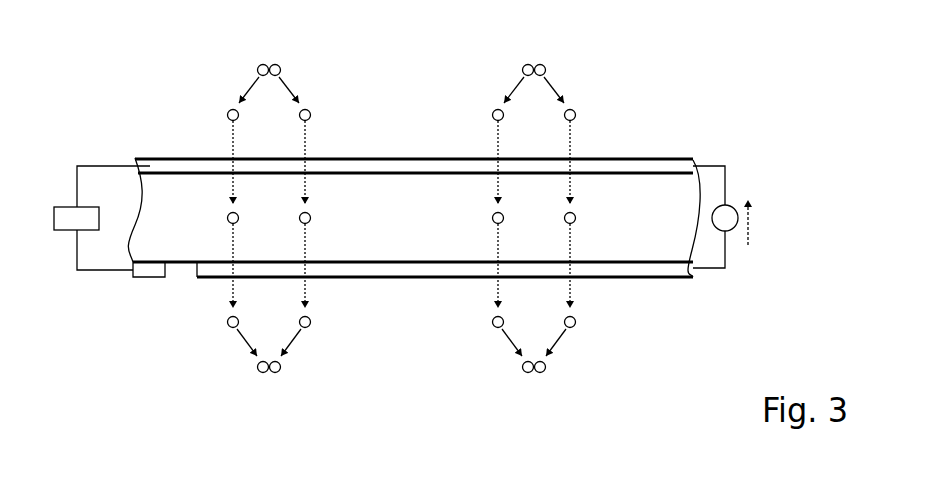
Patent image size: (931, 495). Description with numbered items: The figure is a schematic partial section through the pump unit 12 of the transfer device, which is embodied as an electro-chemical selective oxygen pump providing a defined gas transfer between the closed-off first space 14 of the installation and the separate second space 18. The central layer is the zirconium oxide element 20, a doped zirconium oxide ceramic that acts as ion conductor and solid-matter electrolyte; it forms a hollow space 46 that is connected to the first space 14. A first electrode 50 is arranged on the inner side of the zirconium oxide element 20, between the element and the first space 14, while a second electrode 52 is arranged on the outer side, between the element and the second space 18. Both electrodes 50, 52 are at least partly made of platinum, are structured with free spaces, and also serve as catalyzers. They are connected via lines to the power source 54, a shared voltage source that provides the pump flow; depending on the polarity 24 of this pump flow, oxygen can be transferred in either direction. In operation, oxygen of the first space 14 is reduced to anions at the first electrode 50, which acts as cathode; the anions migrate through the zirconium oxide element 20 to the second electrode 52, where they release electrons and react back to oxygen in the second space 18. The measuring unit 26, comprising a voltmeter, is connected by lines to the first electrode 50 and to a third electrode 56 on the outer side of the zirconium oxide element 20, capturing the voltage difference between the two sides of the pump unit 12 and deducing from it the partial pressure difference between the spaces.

The pump unit 12 is at (680, 84).
The first space 14 is at (400, 122).
The second space 18 is at (208, 343).
The zirconium oxide element 20 is at (402, 245).
The polarity 24 is at (751, 221).
The measuring unit 26 is at (60, 206).
The hollow space 46 is at (660, 133).
The first electrode 50 is at (158, 172).
The second electrode 52 is at (665, 270).
The power source 54 is at (735, 226).
The third electrode 56 is at (136, 279).